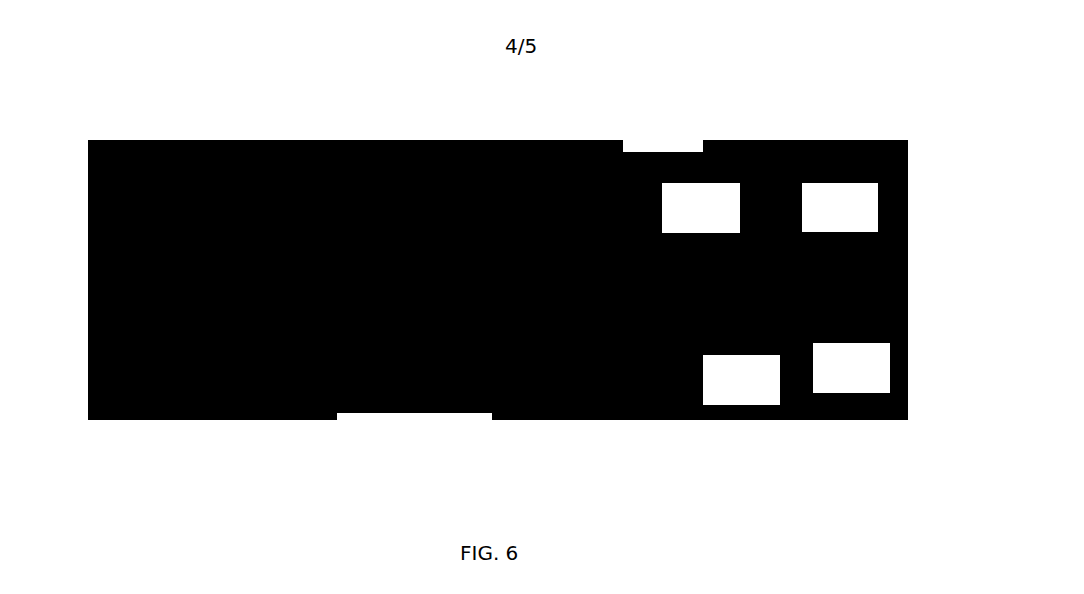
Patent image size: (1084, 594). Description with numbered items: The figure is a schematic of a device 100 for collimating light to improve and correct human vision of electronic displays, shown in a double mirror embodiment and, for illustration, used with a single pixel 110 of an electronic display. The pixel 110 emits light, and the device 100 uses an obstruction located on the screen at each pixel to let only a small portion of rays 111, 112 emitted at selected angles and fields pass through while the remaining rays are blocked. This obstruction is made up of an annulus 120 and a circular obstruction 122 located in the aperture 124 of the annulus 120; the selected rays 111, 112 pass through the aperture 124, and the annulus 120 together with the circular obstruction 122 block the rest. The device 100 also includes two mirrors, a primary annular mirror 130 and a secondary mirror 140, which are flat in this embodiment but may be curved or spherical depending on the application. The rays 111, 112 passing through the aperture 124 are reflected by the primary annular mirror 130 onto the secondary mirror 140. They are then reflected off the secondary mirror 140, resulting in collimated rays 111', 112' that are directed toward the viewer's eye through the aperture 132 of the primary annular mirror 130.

The device 100 is at (667, 47).
The pixel 110 is at (128, 172).
The ray 111 is at (277, 235).
The ray 112 is at (309, 378).
The annulus 120 is at (512, 142).
The circular obstruction 122 is at (522, 292).
The aperture 124 is at (521, 363).
The primary annular mirror 130 is at (613, 140).
The aperture 132 is at (705, 373).
The secondary mirror 140 is at (663, 213).
The collimated ray 111' is at (728, 221).
The collimated ray 112' is at (728, 354).